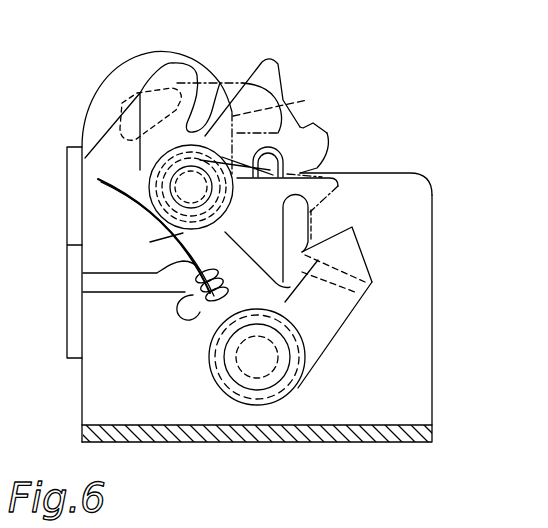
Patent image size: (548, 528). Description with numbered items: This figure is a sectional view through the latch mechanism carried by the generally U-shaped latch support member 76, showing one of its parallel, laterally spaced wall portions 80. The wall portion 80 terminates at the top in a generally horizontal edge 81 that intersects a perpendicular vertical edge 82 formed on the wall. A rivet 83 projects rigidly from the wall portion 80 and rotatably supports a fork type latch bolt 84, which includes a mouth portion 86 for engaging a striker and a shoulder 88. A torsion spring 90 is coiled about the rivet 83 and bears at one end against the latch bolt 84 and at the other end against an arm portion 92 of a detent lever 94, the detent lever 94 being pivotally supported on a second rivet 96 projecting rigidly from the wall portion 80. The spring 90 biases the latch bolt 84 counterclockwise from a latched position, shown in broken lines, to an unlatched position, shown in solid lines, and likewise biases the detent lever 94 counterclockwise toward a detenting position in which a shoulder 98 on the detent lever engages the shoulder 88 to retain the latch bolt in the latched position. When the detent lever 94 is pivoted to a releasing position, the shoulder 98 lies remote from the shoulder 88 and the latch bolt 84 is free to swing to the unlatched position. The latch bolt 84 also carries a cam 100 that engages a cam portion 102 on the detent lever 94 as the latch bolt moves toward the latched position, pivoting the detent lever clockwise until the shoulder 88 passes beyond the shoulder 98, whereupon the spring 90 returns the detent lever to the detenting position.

The latch support member 76 is at (414, 337).
The wall portion 80 is at (433, 283).
The horizontal edge 81 is at (407, 172).
The vertical edge 82 is at (284, 93).
The rivet 83 is at (150, 174).
The fork type latch bolt 84 is at (290, 60).
The mouth portion 86 is at (214, 113).
The shoulder 88 is at (318, 128).
The torsion spring 90 is at (190, 235).
The arm portion 92 is at (163, 280).
The detent lever 94 is at (330, 316).
The rivet 96 is at (233, 368).
The shoulder 98 is at (308, 262).
The cam 100 is at (326, 155).
The cam portion 102 is at (352, 226).